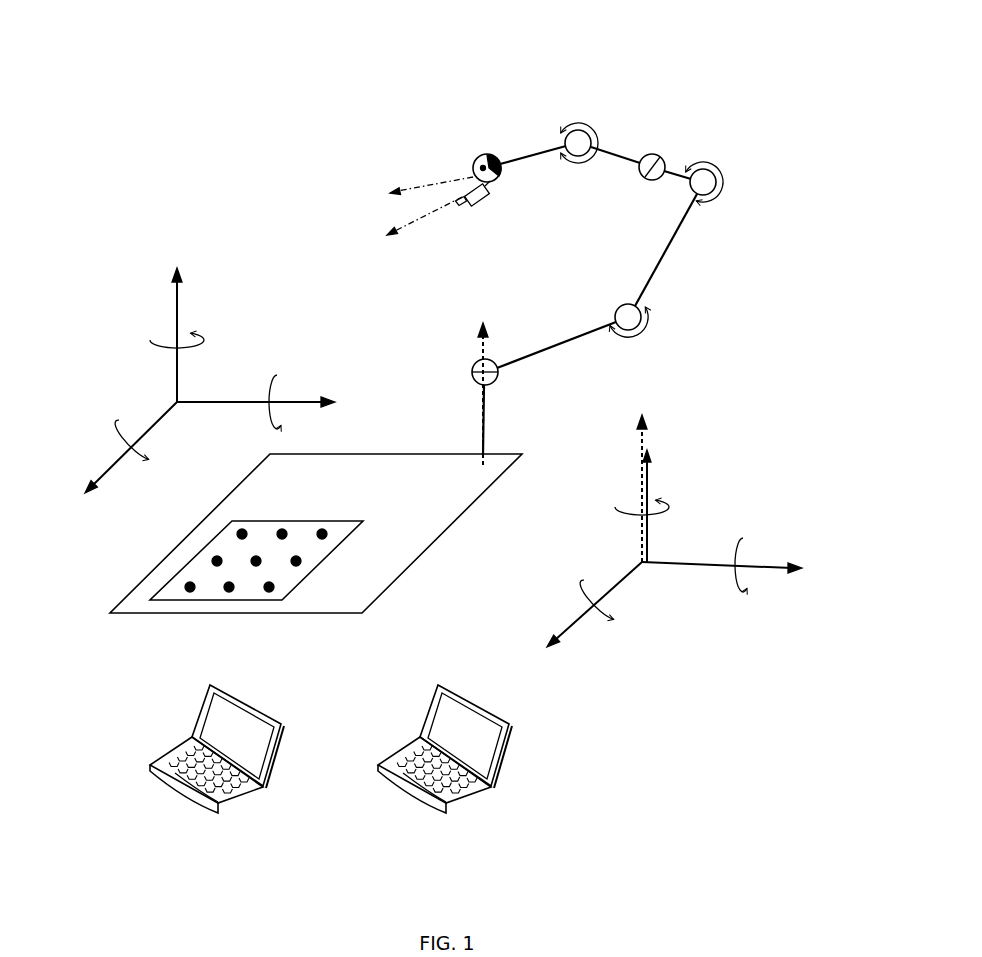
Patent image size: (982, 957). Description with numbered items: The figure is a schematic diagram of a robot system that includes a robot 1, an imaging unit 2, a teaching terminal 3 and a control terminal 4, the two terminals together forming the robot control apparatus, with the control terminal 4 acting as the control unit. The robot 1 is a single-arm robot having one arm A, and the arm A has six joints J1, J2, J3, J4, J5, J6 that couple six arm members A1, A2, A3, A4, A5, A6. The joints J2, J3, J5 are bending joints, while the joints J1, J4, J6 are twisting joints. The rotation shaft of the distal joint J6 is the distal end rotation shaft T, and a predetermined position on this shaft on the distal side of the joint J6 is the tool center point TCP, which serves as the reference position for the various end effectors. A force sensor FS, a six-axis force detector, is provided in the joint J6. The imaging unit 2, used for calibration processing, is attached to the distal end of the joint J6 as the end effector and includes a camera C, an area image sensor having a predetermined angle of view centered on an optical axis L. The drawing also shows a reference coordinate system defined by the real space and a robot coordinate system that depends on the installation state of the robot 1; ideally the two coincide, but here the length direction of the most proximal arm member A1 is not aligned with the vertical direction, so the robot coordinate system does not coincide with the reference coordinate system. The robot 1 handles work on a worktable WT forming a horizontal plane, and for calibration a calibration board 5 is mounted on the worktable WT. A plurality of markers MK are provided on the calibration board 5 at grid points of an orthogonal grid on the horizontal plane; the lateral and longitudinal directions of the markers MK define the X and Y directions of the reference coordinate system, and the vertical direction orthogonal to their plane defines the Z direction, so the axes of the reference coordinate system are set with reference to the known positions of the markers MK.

The robot 1 is at (395, 26).
The imaging unit 2 is at (539, 217).
The teaching terminal 3 is at (238, 749).
The control terminal 4 is at (466, 749).
The calibration board 5 is at (242, 586).
The arm A is at (690, 79).
The arm member A1 is at (531, 420).
The arm member A2 is at (578, 350).
The arm member A3 is at (698, 250).
The arm member A4 is at (709, 157).
The arm member A5 is at (587, 117).
The arm member A6 is at (480, 131).
The joint J1 is at (529, 391).
The joint J2 is at (672, 331).
The joint J3 is at (742, 194).
The joint J4 is at (700, 139).
The joint J5 is at (545, 133).
The joint J6 is at (444, 153).
The force sensor FS is at (535, 184).
The tool center point TCP is at (423, 162).
The camera C is at (425, 237).
The distal end rotation shaft T is at (419, 194).
The optical axis L is at (416, 227).
The markers MK is at (195, 560).
The worktable WT is at (316, 552).